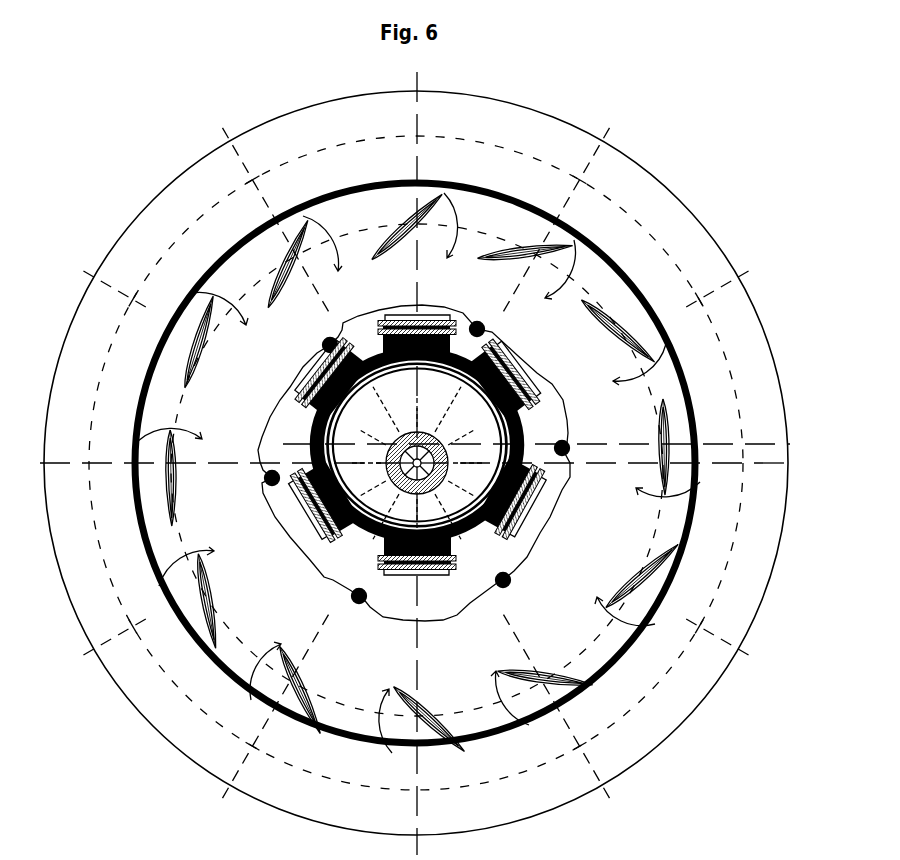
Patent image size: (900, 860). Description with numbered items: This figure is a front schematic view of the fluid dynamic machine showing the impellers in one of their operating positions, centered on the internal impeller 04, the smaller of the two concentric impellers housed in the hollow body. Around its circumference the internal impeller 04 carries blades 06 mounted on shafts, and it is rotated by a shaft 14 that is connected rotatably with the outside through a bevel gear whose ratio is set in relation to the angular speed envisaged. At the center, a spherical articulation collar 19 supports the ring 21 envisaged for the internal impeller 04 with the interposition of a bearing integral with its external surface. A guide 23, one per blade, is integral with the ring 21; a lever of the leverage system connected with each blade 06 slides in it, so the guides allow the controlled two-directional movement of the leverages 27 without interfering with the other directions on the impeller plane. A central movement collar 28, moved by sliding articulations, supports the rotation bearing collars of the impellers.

The internal impeller 04 is at (282, 572).
The blades 06 is at (398, 217).
The shaft 14 is at (567, 472).
The spherical articulation collar 19 is at (567, 430).
The ring 21 is at (463, 322).
The guide 23 is at (527, 355).
The leverages 27 is at (560, 403).
The central movement collar 28 is at (512, 586).